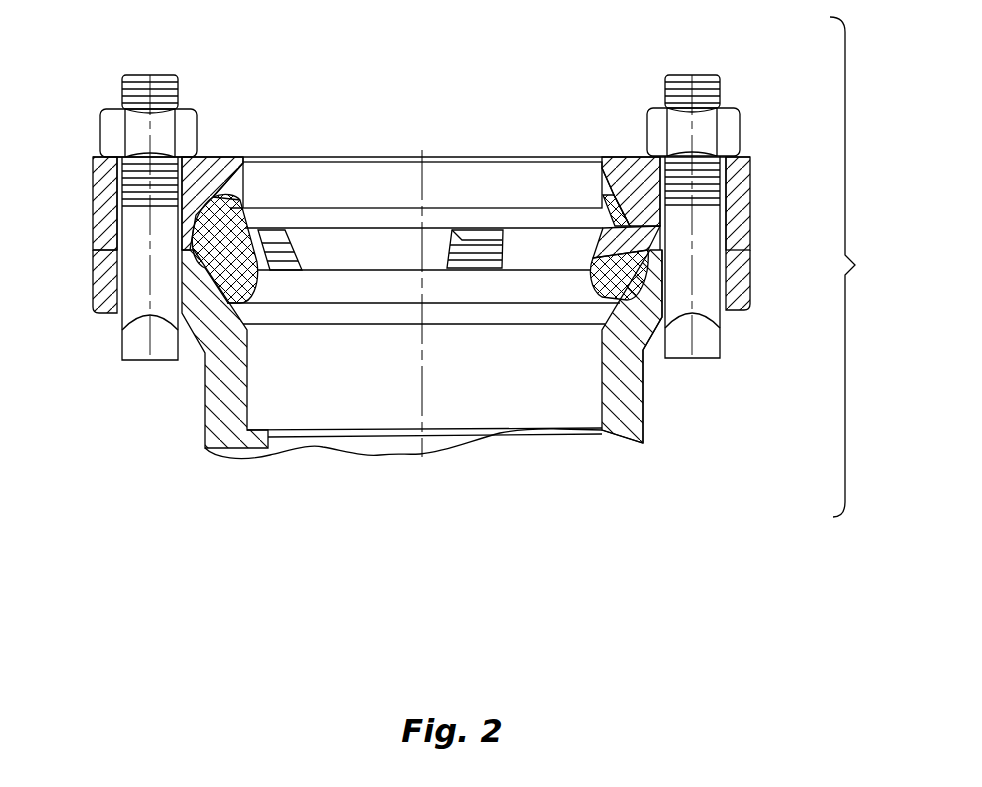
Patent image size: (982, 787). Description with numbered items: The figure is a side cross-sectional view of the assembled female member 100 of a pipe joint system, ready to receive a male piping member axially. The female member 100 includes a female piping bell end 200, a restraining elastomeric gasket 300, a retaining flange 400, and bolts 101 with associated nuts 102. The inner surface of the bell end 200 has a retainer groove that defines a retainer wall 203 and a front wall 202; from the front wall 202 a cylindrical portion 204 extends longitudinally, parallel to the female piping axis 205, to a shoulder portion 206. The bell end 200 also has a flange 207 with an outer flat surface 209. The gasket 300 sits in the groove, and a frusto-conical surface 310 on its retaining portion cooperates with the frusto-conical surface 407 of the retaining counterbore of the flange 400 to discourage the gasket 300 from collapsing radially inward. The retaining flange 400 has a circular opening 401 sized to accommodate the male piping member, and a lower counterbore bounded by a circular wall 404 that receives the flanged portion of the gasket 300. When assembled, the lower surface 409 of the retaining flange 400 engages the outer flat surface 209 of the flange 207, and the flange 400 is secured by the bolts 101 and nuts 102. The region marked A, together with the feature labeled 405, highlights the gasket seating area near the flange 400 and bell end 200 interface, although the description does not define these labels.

The female member 100 is at (864, 267).
The bolts 101 is at (128, 90).
The nuts 102 is at (108, 140).
The female piping bell end 200 is at (210, 453).
The front wall 202 is at (645, 346).
The retainer wall 203 is at (651, 336).
The cylindrical portion 204 is at (353, 413).
The female piping axis 205 is at (421, 413).
The shoulder portion 206 is at (601, 438).
The flange 207 is at (110, 308).
The outer flat surface 209 is at (740, 248).
The restraining elastomeric gasket 300 is at (238, 280).
The frusto-conical surface 310 is at (607, 195).
The retaining flange 400 is at (733, 187).
The circular opening 401 is at (330, 183).
The circular wall 404 is at (667, 230).
The seal seat bevel 405 is at (205, 212).
The frusto-conical surface 407 is at (627, 193).
The lower surface 409 is at (107, 245).
The detail region A is at (223, 203).